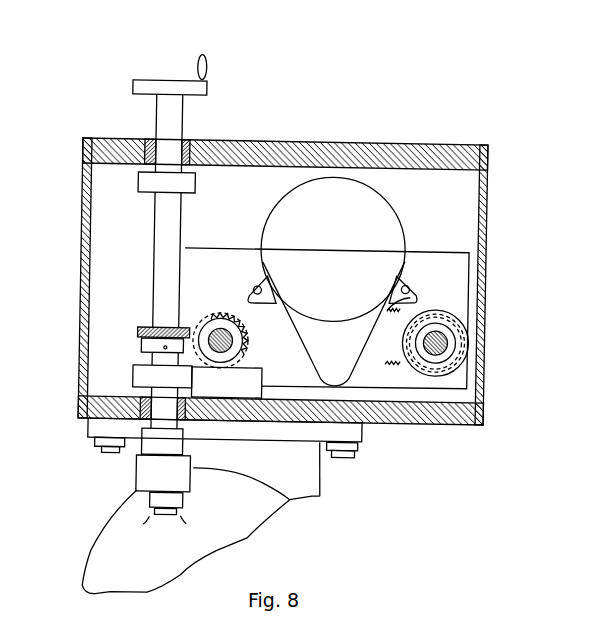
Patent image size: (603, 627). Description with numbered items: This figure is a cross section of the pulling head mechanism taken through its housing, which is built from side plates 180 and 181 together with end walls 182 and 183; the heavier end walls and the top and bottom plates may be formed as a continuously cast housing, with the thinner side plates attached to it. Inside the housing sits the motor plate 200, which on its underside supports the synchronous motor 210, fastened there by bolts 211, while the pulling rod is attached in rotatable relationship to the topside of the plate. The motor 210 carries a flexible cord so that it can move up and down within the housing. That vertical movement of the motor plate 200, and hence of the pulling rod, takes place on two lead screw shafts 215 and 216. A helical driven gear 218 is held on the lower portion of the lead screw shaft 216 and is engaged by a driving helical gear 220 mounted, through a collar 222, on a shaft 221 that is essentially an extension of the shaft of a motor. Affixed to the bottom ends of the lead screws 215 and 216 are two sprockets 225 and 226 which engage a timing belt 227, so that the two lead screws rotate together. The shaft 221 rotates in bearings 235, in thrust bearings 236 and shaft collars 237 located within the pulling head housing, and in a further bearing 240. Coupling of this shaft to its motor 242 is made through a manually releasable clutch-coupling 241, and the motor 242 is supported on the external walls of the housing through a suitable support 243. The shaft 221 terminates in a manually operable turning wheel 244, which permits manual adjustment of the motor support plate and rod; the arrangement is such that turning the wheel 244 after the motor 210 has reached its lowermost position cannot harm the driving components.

The side plate 180 is at (481, 328).
The side plate 181 is at (86, 242).
The end wall 182 is at (347, 148).
The end wall 183 is at (438, 411).
The motor plate 200 is at (454, 277).
The synchronous motor 210 is at (356, 289).
The bolts 211 is at (406, 278).
The lead screw shaft 215 is at (449, 342).
The lead screw shaft 216 is at (234, 339).
The helical driven gear 218 is at (240, 322).
The driving helical gear 220 is at (146, 327).
The shaft 221 is at (185, 244).
The collar 222 is at (147, 346).
The sprocket 225 is at (471, 351).
The sprocket 226 is at (238, 327).
The timing belt 227 is at (413, 292).
The bearings 235 is at (150, 139).
The thrust bearings 236 is at (188, 163).
The shaft collars 237 is at (191, 180).
The bearing 240 is at (155, 439).
The clutch-coupling 241 is at (154, 474).
The motor 242 is at (168, 568).
The support 243 is at (326, 472).
The turning wheel 244 is at (184, 86).